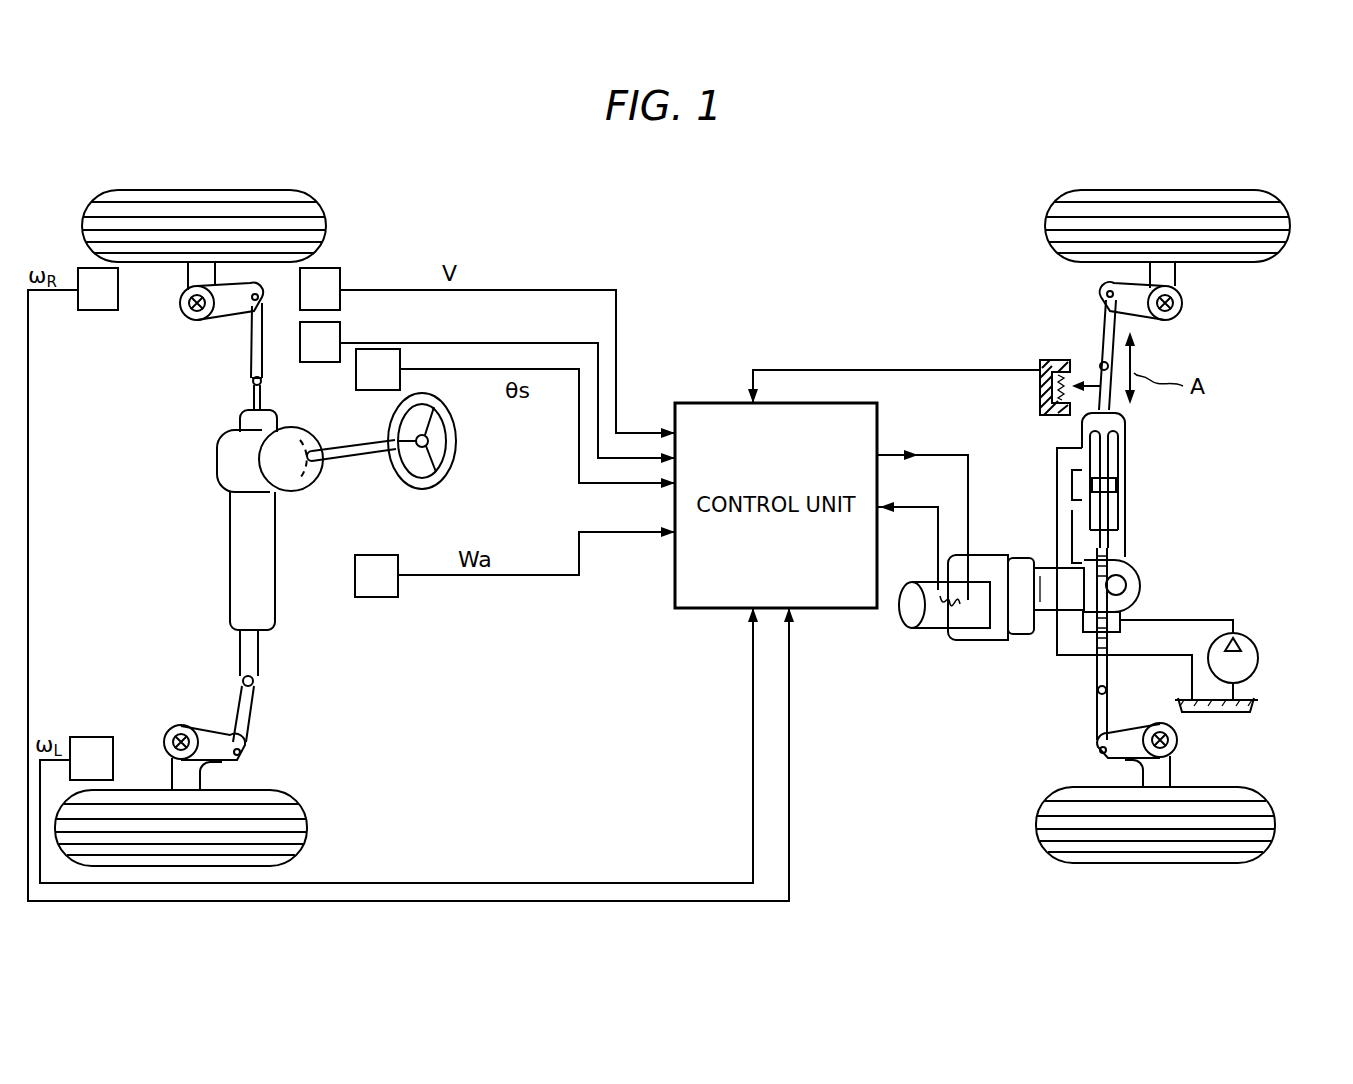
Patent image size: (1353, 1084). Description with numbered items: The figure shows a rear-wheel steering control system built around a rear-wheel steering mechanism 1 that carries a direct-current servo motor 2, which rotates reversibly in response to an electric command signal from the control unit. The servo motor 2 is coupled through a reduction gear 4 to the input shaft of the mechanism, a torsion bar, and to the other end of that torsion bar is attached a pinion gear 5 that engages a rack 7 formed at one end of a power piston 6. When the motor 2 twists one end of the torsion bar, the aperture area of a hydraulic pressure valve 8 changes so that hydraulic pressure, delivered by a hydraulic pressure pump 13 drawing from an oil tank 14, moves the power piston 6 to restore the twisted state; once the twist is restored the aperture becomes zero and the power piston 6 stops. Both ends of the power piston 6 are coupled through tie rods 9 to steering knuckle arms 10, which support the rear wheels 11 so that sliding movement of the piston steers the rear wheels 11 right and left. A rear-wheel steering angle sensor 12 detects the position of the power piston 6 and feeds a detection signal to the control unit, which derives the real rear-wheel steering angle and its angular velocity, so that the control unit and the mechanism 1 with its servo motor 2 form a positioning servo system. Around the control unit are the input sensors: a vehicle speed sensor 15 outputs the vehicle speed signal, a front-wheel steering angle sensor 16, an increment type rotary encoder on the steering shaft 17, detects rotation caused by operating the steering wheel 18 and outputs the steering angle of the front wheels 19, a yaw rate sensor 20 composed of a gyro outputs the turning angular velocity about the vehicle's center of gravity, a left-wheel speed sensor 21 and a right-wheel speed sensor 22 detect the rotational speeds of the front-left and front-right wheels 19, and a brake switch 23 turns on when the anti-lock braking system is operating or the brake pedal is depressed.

The rear-wheel steering mechanism 1 is at (1134, 554).
The dc servo motor 2 is at (925, 632).
The reduction gear 4 is at (1020, 642).
The pinion gear 5 is at (1142, 583).
The power piston 6 is at (1127, 435).
The rack 7 is at (1110, 560).
The hydraulic pressure valve 8 is at (1052, 615).
The tie rods 9 is at (1100, 320).
The steering knuckle arms 10 is at (1146, 312).
The rear wheels 11 is at (1255, 190).
The rear-wheel steering angle sensor 12 is at (1045, 358).
The hydraulic pressure pump 13 is at (1260, 652).
The oil tank 14 is at (1262, 702).
The vehicle speed sensor 15 is at (336, 270).
The front-wheel steering angle sensor 16 is at (356, 379).
The steering shaft 17 is at (357, 455).
The steering wheel 18 is at (456, 450).
The front wheels 19 is at (305, 190).
The yaw rate sensor 20 is at (375, 555).
The left-wheel speed sensor 21 is at (90, 737).
The right-wheel speed sensor 22 is at (98, 309).
The brake switch 23 is at (340, 330).